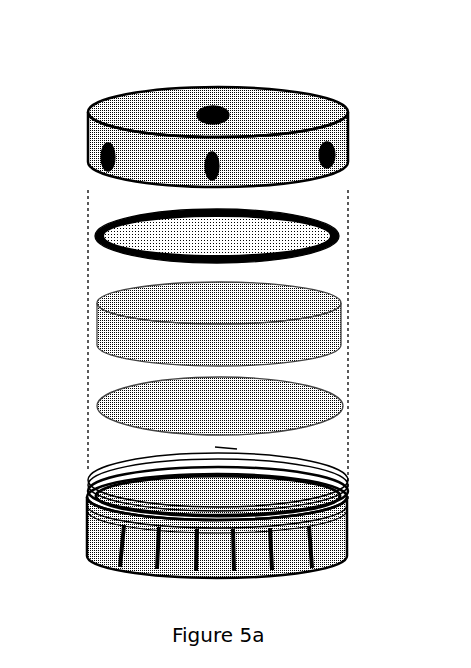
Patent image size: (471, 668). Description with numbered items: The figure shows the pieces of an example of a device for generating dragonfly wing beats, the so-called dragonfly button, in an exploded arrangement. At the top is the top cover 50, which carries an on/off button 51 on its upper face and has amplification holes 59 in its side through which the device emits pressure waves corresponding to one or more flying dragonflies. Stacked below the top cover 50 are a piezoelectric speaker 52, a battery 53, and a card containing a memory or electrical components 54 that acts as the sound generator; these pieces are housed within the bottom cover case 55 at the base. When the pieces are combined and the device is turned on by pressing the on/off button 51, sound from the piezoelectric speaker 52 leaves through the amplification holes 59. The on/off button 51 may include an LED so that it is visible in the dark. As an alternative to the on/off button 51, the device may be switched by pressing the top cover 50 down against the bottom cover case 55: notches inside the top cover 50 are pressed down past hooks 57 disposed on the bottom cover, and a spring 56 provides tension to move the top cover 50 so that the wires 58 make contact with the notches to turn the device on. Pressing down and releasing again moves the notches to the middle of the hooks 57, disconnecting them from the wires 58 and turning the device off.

The top cover 50 is at (357, 131).
The on/off button 51 is at (213, 105).
The piezoelectric speaker 52 is at (343, 237).
The battery 53 is at (348, 330).
The card containing a memory or electrical components 54 is at (350, 406).
The bottom cover case 55 is at (352, 530).
The spring 56 is at (88, 481).
The hooks 57 is at (88, 541).
The wires 58 is at (100, 566).
The amplification holes 59 is at (345, 158).